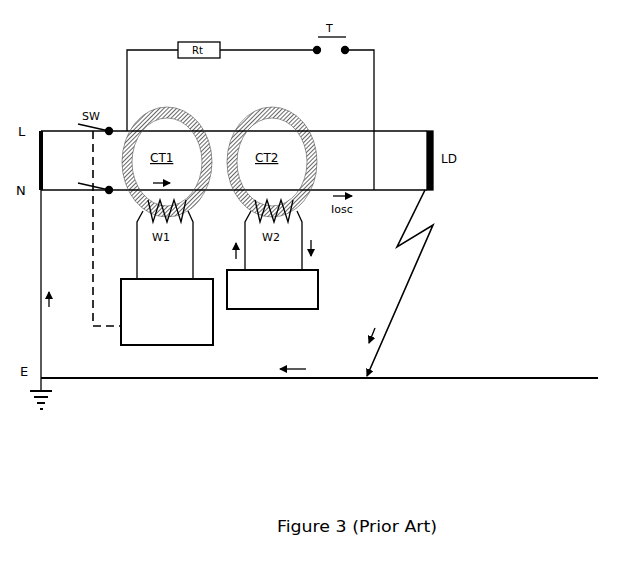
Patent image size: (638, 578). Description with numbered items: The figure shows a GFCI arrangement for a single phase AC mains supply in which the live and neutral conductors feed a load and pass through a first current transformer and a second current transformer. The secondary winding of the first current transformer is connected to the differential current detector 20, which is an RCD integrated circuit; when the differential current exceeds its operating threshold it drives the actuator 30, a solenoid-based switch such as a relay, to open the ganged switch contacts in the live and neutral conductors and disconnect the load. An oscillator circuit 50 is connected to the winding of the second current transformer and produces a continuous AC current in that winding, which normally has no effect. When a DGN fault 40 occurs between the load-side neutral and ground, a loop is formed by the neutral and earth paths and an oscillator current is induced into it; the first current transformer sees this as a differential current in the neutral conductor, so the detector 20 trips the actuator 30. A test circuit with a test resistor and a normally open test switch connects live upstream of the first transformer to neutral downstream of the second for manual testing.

The differential current detector circuit 20 is at (199, 315).
The actuator 30 is at (213, 320).
The oscillator circuit 50 is at (318, 292).
The DGN fault 40 is at (403, 300).